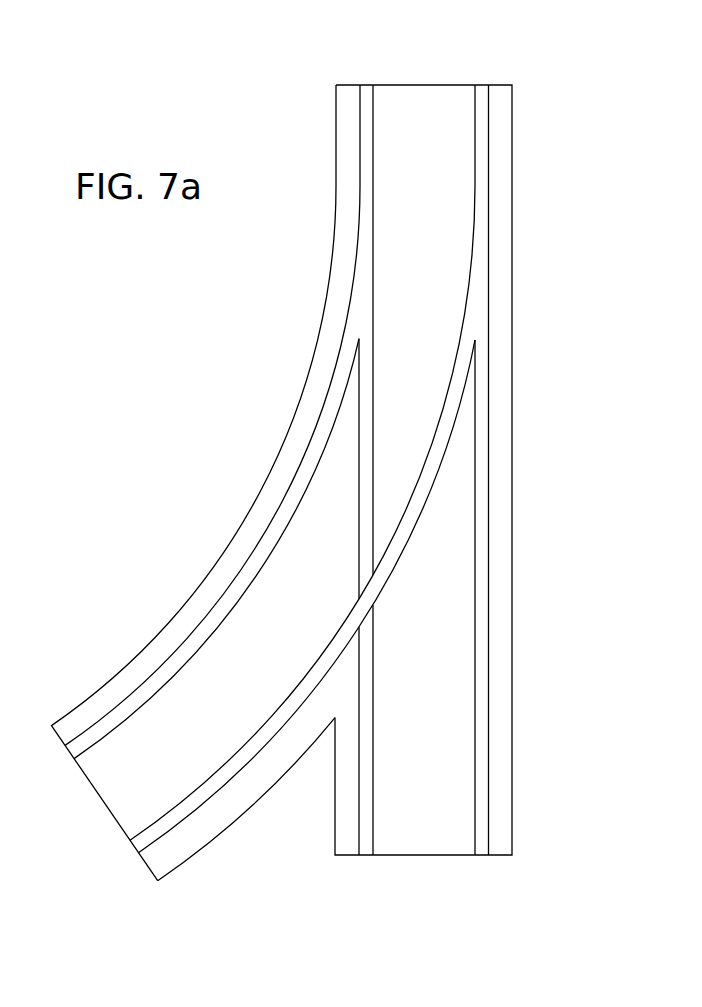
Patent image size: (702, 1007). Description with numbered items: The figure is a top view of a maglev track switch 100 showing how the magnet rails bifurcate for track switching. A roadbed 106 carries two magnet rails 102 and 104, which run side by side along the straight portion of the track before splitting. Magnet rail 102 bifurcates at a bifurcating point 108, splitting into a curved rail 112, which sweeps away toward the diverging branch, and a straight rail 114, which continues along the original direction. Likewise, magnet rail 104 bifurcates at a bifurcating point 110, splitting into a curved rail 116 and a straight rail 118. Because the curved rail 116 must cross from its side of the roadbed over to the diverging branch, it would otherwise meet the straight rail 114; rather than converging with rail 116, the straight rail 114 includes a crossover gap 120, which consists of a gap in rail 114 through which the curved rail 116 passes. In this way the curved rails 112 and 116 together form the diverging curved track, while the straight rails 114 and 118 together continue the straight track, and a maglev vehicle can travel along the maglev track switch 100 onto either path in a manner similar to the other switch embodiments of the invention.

The maglev track switch 100 is at (548, 60).
The magnet rail 102 is at (363, 105).
The magnet rail 104 is at (483, 170).
The roadbed 106 is at (440, 100).
The bifurcating point 108 is at (362, 317).
The bifurcating point 110 is at (483, 325).
The curved rail 112 is at (330, 410).
The straight rail 114 is at (367, 497).
The curved rail 116 is at (450, 423).
The straight rail 118 is at (481, 463).
The crossover gap 120 is at (370, 590).